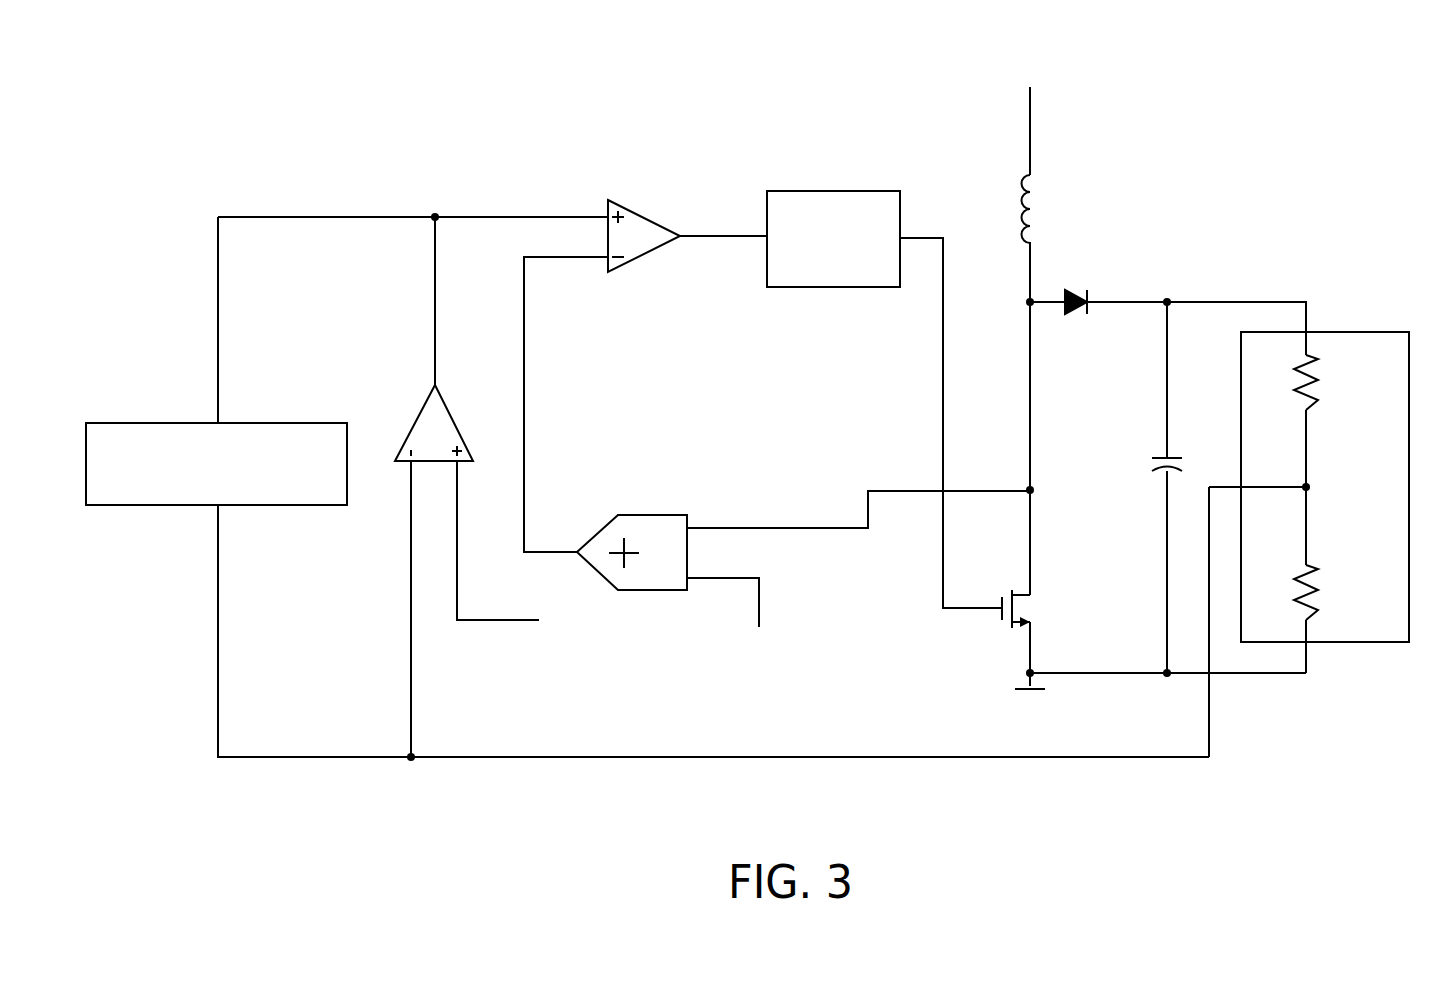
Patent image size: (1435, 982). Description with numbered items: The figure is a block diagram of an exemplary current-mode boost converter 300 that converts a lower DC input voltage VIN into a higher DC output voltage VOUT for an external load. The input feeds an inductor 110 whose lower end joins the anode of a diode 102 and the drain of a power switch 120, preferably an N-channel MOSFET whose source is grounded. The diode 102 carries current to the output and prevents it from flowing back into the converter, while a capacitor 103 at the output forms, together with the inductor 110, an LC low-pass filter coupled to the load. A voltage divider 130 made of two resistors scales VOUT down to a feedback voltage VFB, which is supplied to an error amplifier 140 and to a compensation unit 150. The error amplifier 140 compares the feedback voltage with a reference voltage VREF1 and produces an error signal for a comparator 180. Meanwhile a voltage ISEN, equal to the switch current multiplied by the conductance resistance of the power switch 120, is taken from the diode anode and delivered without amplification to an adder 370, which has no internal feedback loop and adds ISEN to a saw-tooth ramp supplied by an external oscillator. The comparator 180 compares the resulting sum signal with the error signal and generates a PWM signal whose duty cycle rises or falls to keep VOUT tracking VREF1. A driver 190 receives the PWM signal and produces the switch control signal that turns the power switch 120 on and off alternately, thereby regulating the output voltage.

The current-mode boost converter 300 is at (217, 102).
The compensation unit 150 is at (149, 420).
The error amplifier 140 is at (445, 394).
The comparator 180 is at (634, 207).
The driver 190 is at (901, 207).
The adder without an internal feedback loop 370 is at (657, 513).
The inductor 110 is at (1034, 200).
The diode 102 is at (1073, 288).
The capacitor 103 is at (1162, 454).
The power switch 120 is at (1020, 613).
The voltage divider 130 is at (1350, 332).